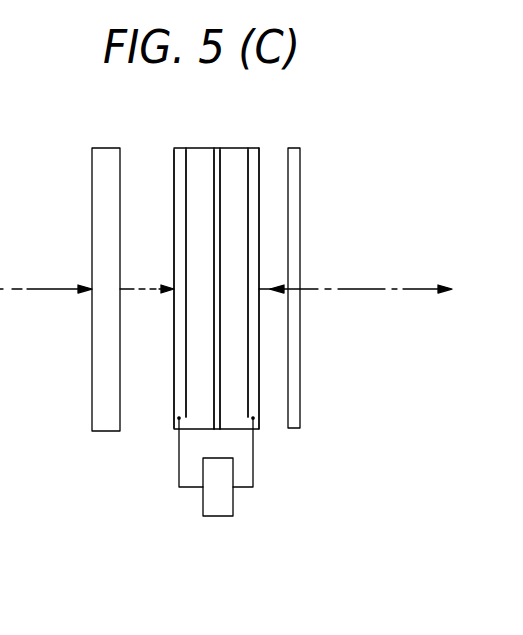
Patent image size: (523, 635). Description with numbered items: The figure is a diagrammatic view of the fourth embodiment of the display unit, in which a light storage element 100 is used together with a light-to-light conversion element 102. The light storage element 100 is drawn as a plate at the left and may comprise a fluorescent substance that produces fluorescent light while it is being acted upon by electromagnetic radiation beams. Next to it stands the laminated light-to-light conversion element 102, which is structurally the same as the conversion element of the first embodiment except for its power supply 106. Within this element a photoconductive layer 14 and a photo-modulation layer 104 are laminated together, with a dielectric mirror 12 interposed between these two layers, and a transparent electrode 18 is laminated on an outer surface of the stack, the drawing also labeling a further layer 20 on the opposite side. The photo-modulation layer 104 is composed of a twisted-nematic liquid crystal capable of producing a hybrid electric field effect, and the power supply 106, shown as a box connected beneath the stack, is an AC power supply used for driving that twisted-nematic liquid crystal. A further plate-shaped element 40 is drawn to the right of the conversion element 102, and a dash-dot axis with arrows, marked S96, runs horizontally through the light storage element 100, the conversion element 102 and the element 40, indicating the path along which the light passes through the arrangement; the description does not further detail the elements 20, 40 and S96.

The light storage element 100 is at (91, 180).
The light-to-light conversion element 102 is at (158, 406).
The transparent electrode 18 is at (173, 173).
The photoconductive layer 14 is at (197, 163).
The dielectric mirror 12 is at (217, 148).
The photo-modulation layer 104 is at (238, 148).
The substrate 20 is at (259, 149).
The second polarizer plate 40 is at (300, 193).
The power supply 106 is at (225, 504).
The light beam S96 is at (348, 291).